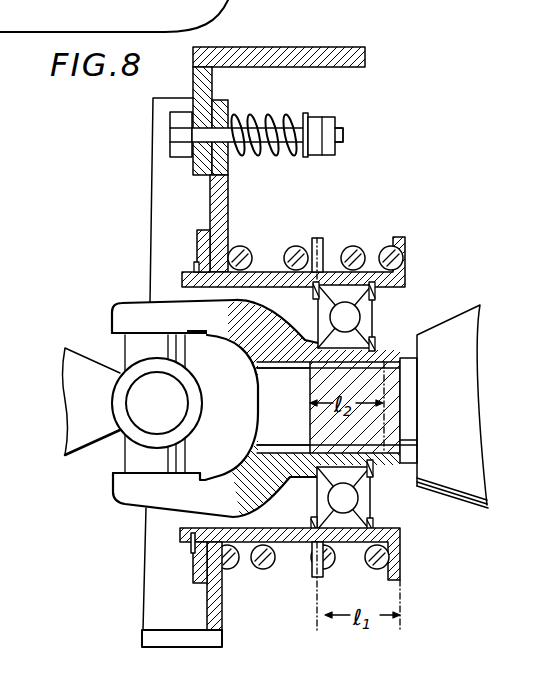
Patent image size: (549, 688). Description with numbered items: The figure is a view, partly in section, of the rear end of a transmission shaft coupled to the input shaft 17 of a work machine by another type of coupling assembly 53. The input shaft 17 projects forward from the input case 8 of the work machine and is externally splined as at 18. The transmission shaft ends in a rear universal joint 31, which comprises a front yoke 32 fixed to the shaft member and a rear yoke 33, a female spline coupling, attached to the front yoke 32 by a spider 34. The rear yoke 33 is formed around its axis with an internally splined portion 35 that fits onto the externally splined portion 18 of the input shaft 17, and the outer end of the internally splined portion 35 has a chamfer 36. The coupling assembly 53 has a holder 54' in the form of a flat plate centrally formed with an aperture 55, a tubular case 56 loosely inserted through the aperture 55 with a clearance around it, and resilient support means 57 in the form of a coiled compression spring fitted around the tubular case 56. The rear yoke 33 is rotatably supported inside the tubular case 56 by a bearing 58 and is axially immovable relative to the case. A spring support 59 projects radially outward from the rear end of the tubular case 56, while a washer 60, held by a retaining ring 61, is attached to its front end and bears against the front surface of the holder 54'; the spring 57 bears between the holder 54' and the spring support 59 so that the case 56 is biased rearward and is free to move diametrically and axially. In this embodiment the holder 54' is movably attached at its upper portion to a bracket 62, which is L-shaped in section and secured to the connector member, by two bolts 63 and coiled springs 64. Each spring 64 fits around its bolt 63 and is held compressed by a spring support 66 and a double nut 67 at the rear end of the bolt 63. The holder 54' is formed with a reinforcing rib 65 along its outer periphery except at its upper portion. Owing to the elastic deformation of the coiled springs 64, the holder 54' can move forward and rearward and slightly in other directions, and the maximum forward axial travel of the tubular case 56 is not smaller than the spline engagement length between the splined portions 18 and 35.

The input case 8 is at (472, 483).
The input shaft 17 is at (405, 461).
The externally splined portion 18 is at (415, 347).
The rear universal joint 31 is at (107, 304).
The front yoke 32 is at (78, 400).
The rear yoke 33 is at (137, 497).
The spider 34 is at (148, 415).
The internally splined portion 35 is at (277, 366).
The chamfer 36 is at (387, 372).
The coupling assembly 53 is at (408, 203).
The holder 54' is at (246, 223).
The aperture 55 is at (240, 252).
The tubular case 56 is at (293, 544).
The resilient support means 57 is at (293, 252).
The bearing 58 is at (360, 330).
The spring support 59 is at (398, 568).
The washer 60 is at (198, 573).
The retaining ring 61 is at (192, 548).
The bracket 62 is at (293, 56).
The bolt 63 is at (175, 137).
The coiled spring 64 is at (273, 115).
The reinforcing rib 65 is at (154, 218).
The spring support 66 is at (307, 115).
The double nut 67 is at (330, 135).